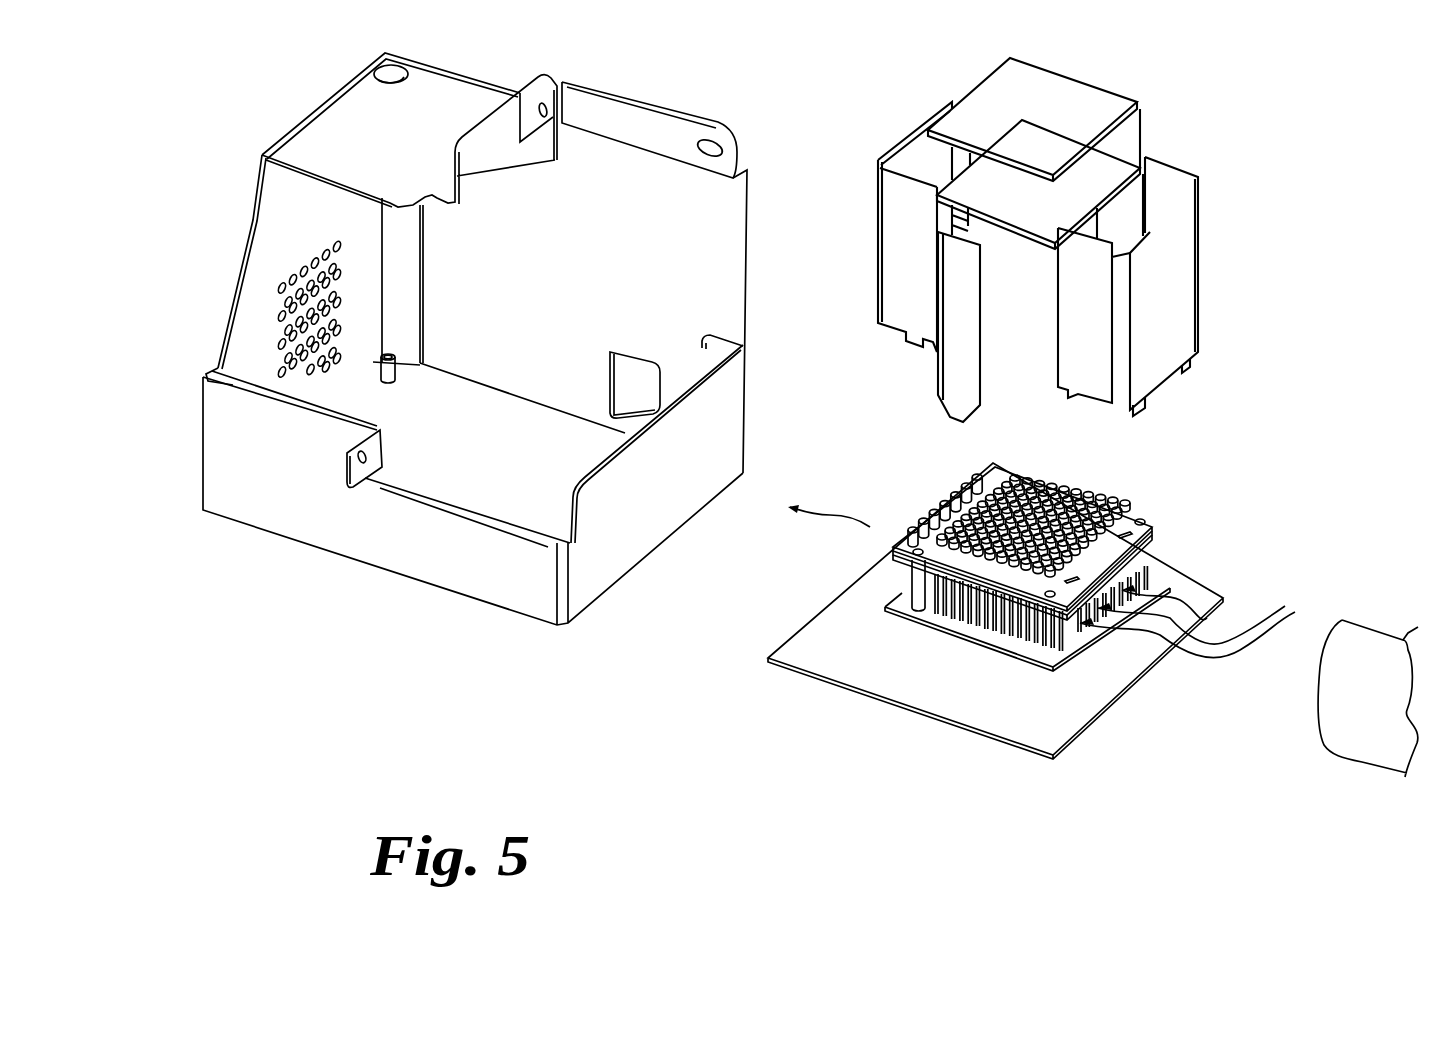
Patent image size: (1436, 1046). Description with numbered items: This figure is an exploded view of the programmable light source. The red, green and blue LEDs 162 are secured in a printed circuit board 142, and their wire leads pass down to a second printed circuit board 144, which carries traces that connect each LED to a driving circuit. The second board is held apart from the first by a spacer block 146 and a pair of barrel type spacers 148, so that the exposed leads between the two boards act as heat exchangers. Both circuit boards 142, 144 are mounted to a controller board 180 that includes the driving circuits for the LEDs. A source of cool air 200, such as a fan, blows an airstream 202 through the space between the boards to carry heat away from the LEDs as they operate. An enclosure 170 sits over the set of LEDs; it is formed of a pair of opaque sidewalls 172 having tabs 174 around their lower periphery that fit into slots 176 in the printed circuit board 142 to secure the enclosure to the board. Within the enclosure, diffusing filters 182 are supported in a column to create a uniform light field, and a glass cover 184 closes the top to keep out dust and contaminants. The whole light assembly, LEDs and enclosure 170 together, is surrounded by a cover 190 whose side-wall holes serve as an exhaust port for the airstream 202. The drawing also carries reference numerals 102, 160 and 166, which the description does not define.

The ventilation perforations 102 is at (332, 273).
The cover 190 is at (445, 557).
The glass cover 184 is at (1100, 108).
The enclosure 170 is at (1058, 233).
The opaque sidewalls 172 is at (895, 230).
The diffusing filters 182 is at (1038, 312).
The tabs 174 is at (1188, 355).
The red, green, and blue LEDs 162 is at (1118, 500).
The slots 176 is at (1113, 507).
The pins 160 is at (950, 497).
The printed circuit board 142 is at (1157, 537).
The spacer block 146 is at (1140, 563).
The second printed circuit board 144 is at (1163, 565).
The controller board 180 is at (1163, 573).
The airstream 202 is at (897, 530).
The barrel type spacers 148 is at (913, 573).
The heat sink fins 166 is at (970, 605).
The source of cool air 200 is at (1382, 700).